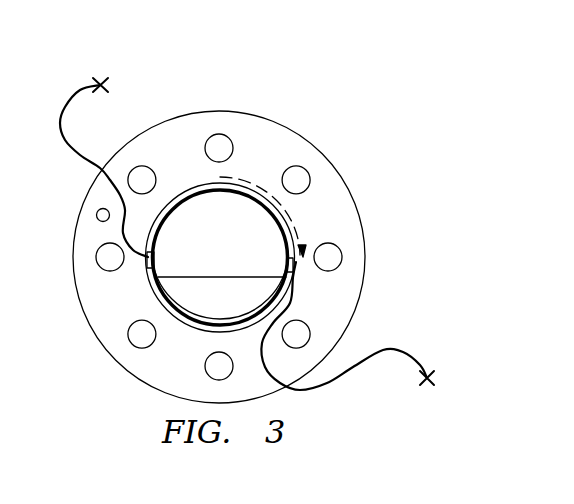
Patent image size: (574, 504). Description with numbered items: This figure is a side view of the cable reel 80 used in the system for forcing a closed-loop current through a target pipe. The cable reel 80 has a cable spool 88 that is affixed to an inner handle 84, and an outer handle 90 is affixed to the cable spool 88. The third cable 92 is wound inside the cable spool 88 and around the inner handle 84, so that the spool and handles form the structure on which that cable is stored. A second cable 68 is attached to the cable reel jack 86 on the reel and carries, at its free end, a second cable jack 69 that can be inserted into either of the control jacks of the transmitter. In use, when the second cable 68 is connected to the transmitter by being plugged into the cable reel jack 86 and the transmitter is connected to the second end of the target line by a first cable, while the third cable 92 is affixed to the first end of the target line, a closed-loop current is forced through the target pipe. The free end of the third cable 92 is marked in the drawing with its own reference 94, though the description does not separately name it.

The second cable 68 is at (60, 125).
The second cable jack 69 is at (100, 84).
The cable reel 80 is at (221, 244).
The inner handle 84 is at (200, 305).
The cable reel jack 86 is at (153, 243).
The cable spool 88 is at (275, 130).
The outer handle 90 is at (97, 215).
The third cable 92 is at (395, 350).
The pull wire end 94 is at (433, 380).